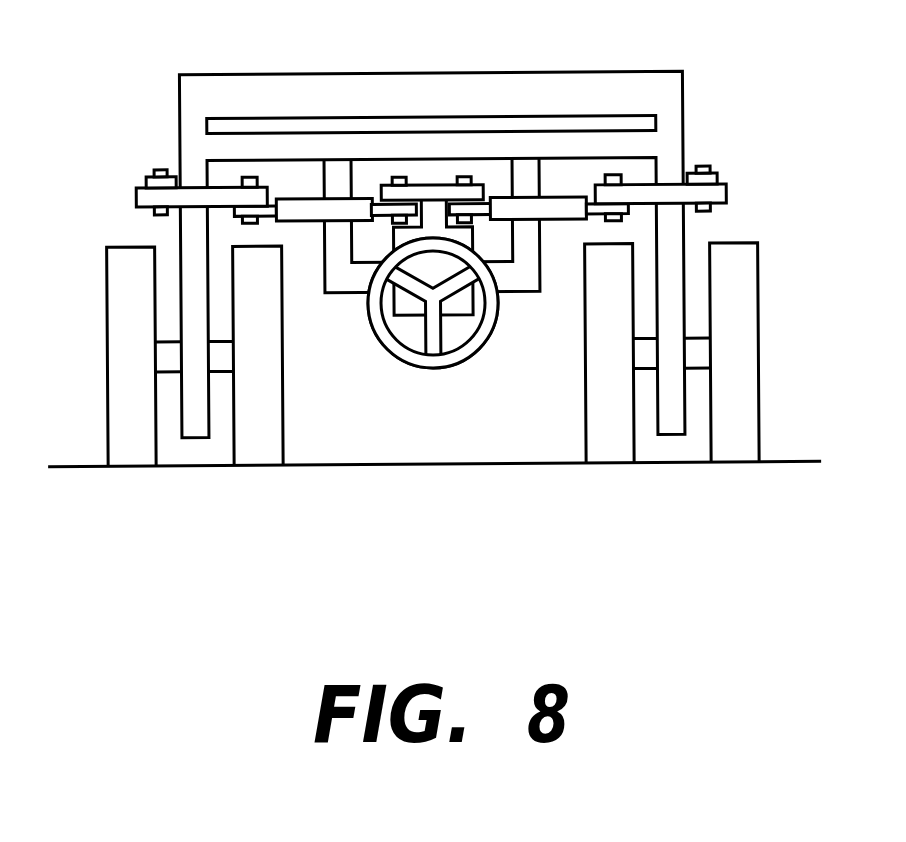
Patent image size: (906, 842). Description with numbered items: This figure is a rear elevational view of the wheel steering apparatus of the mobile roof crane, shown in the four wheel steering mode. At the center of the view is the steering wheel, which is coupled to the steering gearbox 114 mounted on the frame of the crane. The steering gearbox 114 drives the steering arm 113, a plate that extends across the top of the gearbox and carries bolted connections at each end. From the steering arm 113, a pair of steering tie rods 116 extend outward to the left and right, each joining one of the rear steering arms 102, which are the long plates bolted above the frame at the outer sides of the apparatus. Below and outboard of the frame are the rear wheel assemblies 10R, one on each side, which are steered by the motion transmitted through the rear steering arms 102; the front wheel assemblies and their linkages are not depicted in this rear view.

The rear steering arm 102 is at (136, 197).
The steering tie rod 116 is at (305, 207).
The steering arm 113 is at (433, 193).
The steering gearbox 114 is at (403, 237).
The rear wheel assembly 10R is at (199, 470).